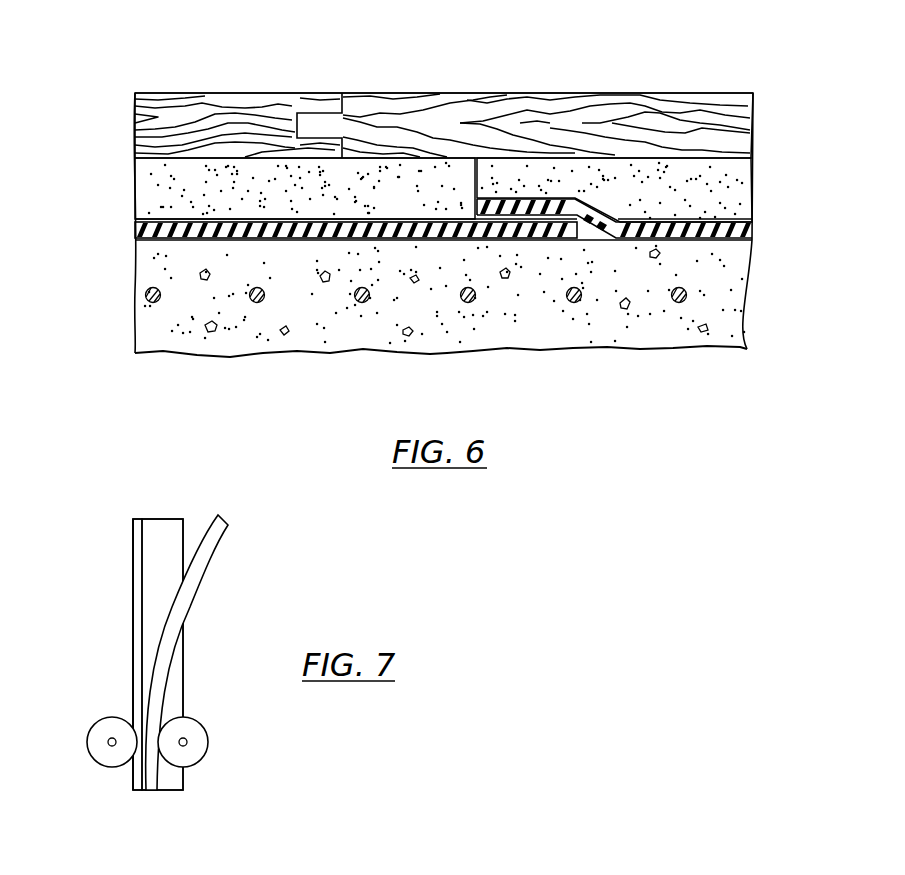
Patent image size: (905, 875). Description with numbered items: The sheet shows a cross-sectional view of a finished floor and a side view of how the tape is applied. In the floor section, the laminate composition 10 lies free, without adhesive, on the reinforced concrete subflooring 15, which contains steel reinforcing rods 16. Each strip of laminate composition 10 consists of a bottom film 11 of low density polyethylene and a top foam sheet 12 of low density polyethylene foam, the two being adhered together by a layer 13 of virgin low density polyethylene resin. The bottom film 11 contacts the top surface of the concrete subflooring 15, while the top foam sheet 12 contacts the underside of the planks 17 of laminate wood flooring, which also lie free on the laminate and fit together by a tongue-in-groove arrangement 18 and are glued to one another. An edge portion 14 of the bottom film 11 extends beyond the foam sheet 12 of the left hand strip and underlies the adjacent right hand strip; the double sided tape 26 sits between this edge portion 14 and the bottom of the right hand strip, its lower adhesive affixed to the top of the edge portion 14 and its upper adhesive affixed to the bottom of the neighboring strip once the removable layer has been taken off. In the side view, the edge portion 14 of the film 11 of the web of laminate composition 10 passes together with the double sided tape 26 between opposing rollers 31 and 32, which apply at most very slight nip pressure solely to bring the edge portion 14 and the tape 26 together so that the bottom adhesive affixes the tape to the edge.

In FIG. 6, the laminate composition 10 is at (114, 224).
In FIG. 7, the laminate composition 10 is at (130, 512).
In FIG. 6, the bottom film 11 is at (154, 240).
In FIG. 7, the bottom film 11 is at (116, 569).
In FIG. 6, the top foam sheet 12 is at (148, 173).
In FIG. 7, the top foam sheet 12 is at (166, 528).
In FIG. 6, the adhesive layer 13 is at (178, 221).
In FIG. 6, the extended portion of bottom film 14 is at (519, 238).
In FIG. 7, the extended portion of bottom film 14 is at (133, 622).
In FIG. 6, the reinforced concrete subflooring 15 is at (170, 340).
In FIG. 6, the steel reinforcing rods 16 is at (360, 303).
In FIG. 6, the planks of laminate wood flooring 17 is at (175, 100).
In FIG. 6, the tongue-in-groove arrangement 18 is at (296, 130).
In FIG. 6, the double sided tape 26 is at (536, 226).
In FIG. 7, the double sided tape 26 is at (218, 573).
In FIG. 7, the opposing roller 31 is at (87, 742).
In FIG. 7, the opposing roller 32 is at (208, 742).